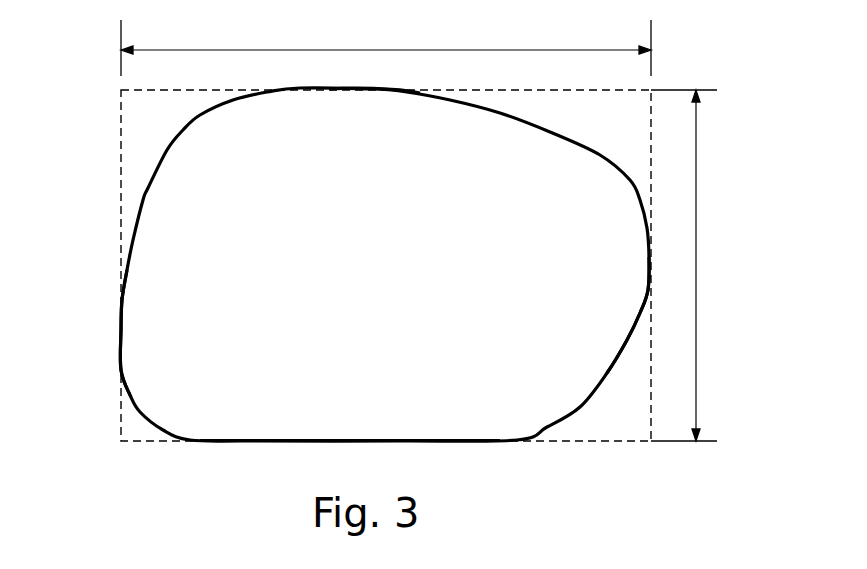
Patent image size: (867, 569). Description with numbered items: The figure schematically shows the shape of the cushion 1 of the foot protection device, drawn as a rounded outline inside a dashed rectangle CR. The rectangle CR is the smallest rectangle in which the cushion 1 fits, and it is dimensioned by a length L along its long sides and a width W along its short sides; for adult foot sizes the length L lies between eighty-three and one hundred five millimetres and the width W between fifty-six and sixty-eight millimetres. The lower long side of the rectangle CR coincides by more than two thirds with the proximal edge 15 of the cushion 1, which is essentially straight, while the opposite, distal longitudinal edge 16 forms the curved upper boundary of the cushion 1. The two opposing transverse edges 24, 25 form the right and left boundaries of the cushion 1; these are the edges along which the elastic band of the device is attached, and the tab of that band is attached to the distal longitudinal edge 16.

The cushion 1 is at (152, 192).
The proximal edge 15 is at (280, 440).
The distal longitudinal edge 16 is at (388, 92).
The transverse edge 24 is at (630, 341).
The transverse edge 25 is at (121, 330).
The rectangle CR is at (121, 112).
The length L is at (386, 47).
The width W is at (690, 265).